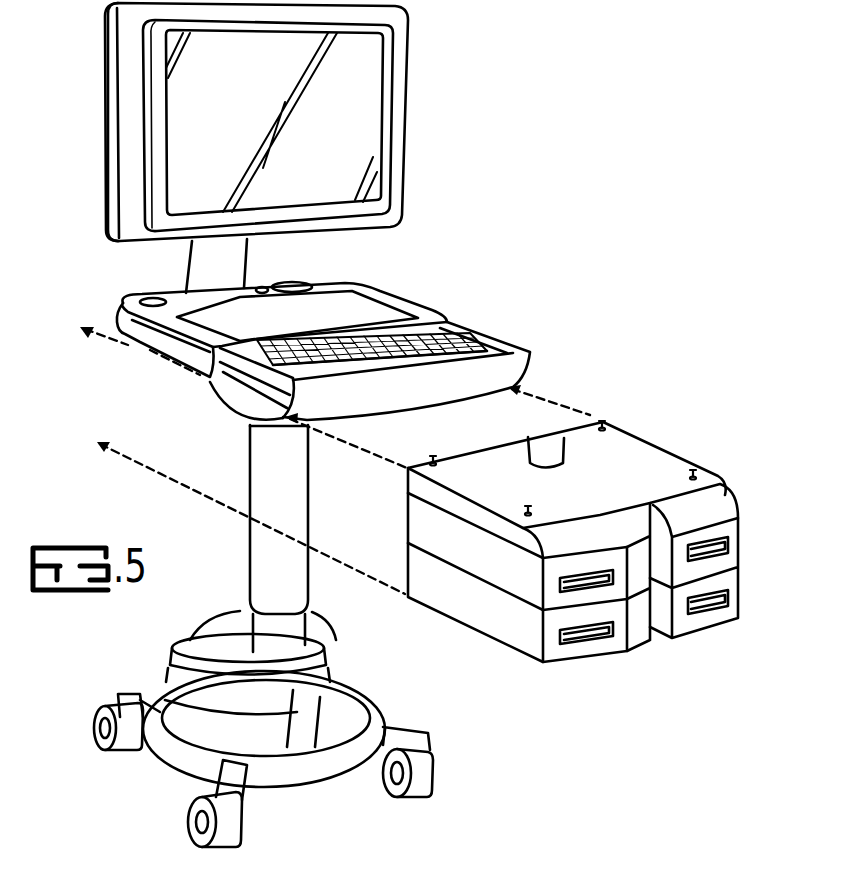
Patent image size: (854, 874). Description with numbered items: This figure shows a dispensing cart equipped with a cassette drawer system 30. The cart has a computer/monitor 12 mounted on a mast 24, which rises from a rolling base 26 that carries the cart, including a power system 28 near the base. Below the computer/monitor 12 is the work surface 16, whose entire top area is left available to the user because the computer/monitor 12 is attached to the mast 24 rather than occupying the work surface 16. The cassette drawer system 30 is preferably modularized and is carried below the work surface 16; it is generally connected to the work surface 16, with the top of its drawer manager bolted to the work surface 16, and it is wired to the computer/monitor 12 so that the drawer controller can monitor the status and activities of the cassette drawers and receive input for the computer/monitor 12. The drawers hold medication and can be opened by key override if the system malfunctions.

The computer/monitor 12 is at (403, 143).
The work surface 16 is at (230, 318).
The mast 24 is at (250, 490).
The rolling base 26 is at (320, 787).
The power system 28 is at (188, 637).
The cassette drawer system 30 is at (638, 411).